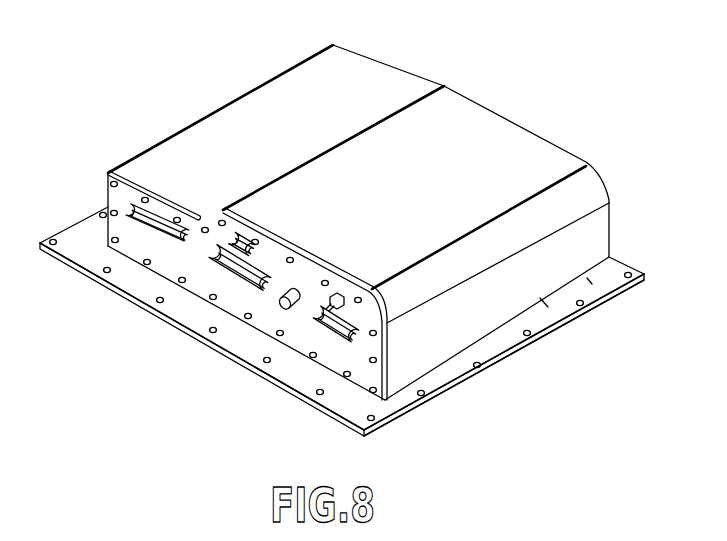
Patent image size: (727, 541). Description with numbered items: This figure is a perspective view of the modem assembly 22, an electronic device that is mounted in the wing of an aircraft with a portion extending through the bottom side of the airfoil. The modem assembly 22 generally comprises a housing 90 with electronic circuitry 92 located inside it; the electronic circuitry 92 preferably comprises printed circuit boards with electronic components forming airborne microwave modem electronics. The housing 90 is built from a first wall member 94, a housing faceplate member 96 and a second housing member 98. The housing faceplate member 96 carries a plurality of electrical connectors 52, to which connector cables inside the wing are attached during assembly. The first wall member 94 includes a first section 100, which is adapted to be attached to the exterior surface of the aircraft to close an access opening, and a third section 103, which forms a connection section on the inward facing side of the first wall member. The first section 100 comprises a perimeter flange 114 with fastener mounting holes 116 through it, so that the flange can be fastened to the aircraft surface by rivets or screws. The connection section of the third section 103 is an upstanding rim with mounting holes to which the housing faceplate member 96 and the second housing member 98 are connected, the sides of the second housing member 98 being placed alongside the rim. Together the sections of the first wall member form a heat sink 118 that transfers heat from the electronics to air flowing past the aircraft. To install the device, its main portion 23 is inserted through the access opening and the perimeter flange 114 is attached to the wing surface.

The modem assembly 22 is at (361, 241).
The main portion 23 is at (599, 218).
The electrical connectors 52 is at (322, 318).
The housing 90 is at (403, 219).
The electronic circuitry 92 is at (492, 147).
The first wall member 94 is at (342, 335).
The housing faceplate member 96 is at (197, 282).
The second housing member 98 is at (242, 113).
The first section 100 is at (524, 350).
The third section 103 is at (587, 278).
The perimeter flange 114 is at (473, 380).
The fastener mounting holes 116 is at (381, 413).
The heat sink 118 is at (545, 303).